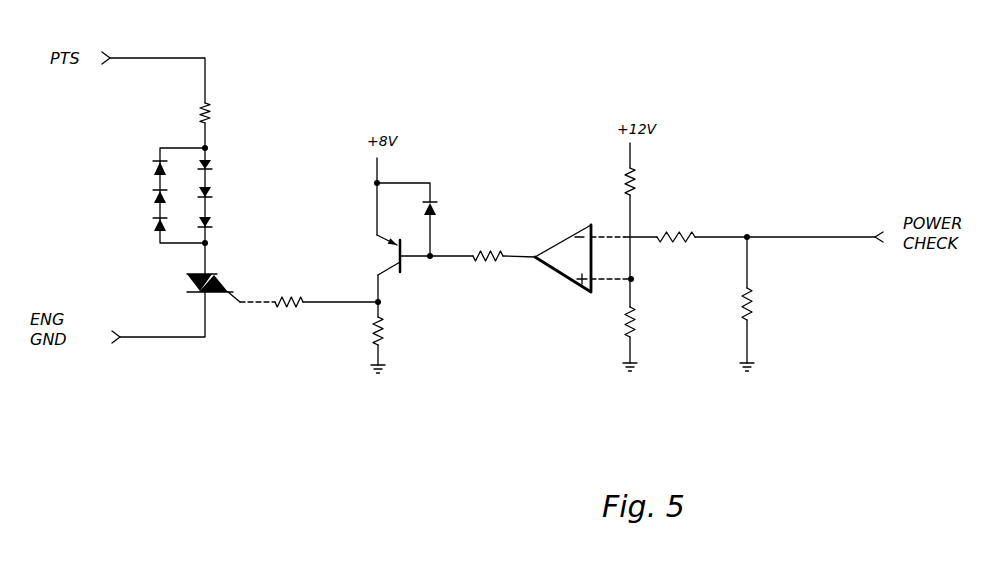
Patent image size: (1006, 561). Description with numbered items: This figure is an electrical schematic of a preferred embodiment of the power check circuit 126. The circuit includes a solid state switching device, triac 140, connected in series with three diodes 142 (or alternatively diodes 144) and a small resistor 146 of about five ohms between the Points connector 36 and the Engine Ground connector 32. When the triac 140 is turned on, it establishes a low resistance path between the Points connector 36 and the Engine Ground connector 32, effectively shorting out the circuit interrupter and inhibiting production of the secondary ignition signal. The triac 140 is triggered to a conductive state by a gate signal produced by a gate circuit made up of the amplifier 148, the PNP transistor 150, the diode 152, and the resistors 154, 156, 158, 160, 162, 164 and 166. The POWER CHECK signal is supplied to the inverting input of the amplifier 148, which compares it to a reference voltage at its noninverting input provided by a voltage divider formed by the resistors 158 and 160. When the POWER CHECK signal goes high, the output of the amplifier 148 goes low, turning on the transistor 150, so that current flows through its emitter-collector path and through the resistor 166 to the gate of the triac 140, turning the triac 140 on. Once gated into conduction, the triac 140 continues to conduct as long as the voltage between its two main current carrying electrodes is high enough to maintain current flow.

The Engine Ground connector 32 is at (114, 342).
The Points connector 36 is at (118, 54).
The power check circuit 126 is at (470, 385).
The triac 140 is at (214, 277).
The diodes 142 is at (212, 166).
The diodes 144 is at (152, 168).
The resistor 146 is at (212, 115).
The amplifier 148 is at (575, 230).
The PNP transistor 150 is at (385, 252).
The diode 152 is at (438, 212).
The resistor 154 is at (755, 300).
The resistor 156 is at (684, 235).
The resistor 158 is at (637, 178).
The resistor 160 is at (636, 326).
The resistor 162 is at (494, 263).
The resistor 164 is at (384, 341).
The resistor 166 is at (298, 312).